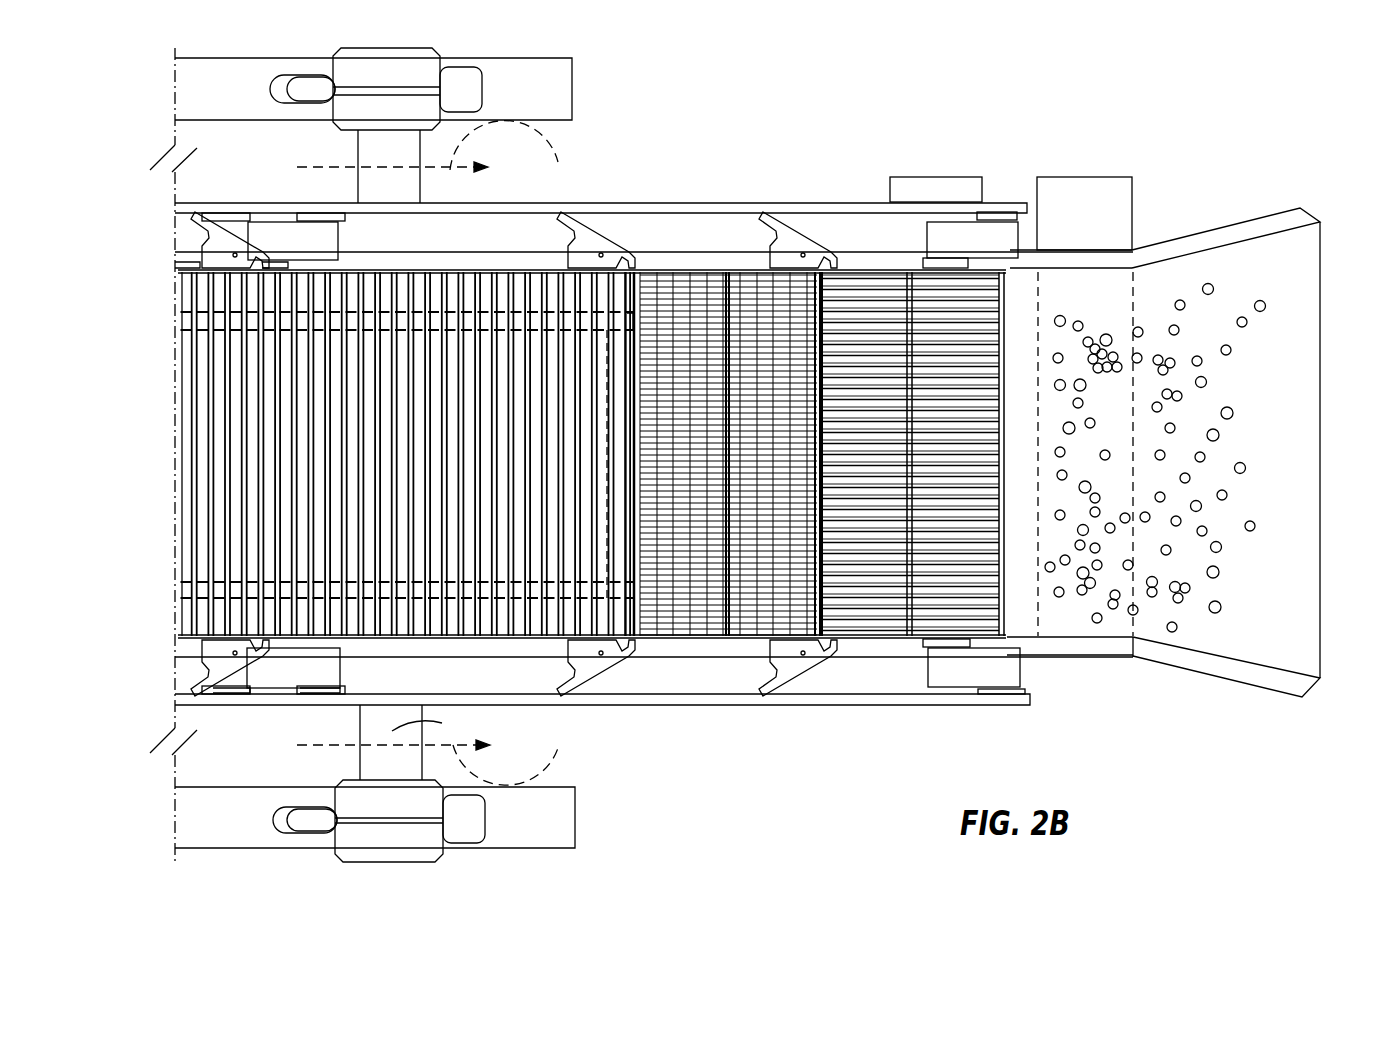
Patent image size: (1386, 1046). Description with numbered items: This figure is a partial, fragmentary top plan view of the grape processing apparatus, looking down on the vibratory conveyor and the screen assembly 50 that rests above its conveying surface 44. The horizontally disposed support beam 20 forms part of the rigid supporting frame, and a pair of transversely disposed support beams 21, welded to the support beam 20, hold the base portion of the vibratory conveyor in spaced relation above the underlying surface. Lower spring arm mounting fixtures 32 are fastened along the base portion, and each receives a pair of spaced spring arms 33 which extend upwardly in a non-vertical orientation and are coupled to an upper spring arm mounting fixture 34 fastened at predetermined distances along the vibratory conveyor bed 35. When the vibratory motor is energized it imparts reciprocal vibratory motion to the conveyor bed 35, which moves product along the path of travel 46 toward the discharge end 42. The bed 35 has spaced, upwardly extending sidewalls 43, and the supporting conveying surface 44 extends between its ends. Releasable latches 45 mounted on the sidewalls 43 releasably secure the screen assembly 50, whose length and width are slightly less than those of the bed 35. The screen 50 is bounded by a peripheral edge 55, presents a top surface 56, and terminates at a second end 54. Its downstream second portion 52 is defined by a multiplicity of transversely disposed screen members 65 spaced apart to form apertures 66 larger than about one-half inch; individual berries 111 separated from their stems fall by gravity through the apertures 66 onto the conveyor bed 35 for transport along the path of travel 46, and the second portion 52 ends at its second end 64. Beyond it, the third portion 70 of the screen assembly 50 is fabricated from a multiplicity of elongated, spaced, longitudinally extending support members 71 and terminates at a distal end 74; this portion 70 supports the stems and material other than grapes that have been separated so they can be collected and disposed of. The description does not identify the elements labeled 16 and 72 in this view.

The drive motor 16 is at (358, 105).
The horizontal support beam 20 is at (519, 102).
The transversely disposed support beams 21 is at (431, 722).
The lower spring arm mounting fixture 32 is at (1003, 215).
The spring arms 33 is at (964, 249).
The upper spring arm mounting fixture 34 is at (923, 265).
The vibratory conveyor bed 35 is at (1290, 612).
The discharge end 42 is at (1297, 262).
The sidewalls 43 is at (1108, 258).
The conveying surface 44 is at (1242, 559).
The releasable latches 45 is at (218, 250).
The path of travel 46 is at (515, 453).
The screen assembly 50 is at (510, 310).
The second portion 52 is at (468, 585).
The second end 54 is at (630, 302).
The peripheral edge 55 is at (452, 270).
The top surface 56 is at (190, 358).
The second end 64 is at (632, 600).
The screen members 65 is at (235, 525).
The apertures 66 is at (232, 438).
The third portion 70 is at (860, 272).
The support members 71 is at (1005, 290).
The slat gap 72 is at (1005, 327).
The distal end 74 is at (1010, 613).
The berries 111 is at (1172, 632).